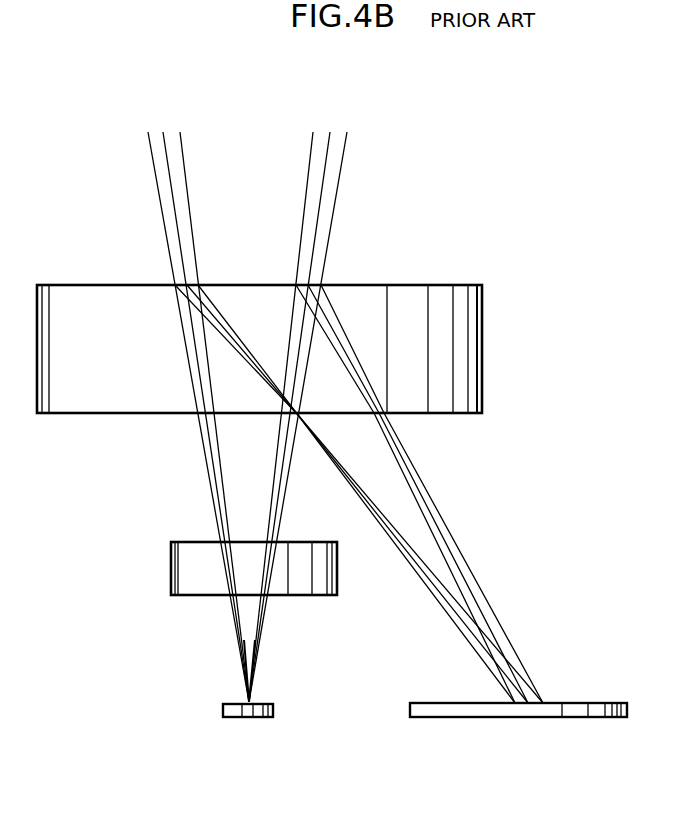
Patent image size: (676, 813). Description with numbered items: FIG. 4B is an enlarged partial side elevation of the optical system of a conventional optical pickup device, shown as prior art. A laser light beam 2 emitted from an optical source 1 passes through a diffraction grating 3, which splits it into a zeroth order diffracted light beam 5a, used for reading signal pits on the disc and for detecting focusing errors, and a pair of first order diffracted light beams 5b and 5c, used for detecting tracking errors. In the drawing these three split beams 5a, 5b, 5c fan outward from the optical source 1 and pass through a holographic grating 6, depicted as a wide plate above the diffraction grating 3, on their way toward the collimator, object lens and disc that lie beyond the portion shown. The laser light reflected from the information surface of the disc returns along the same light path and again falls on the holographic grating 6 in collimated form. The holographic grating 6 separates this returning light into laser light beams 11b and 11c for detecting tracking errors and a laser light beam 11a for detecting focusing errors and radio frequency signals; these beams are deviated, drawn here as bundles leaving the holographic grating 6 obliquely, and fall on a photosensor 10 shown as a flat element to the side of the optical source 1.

The optical source 1 is at (257, 718).
The laser light beam 2 is at (248, 648).
The diffraction grating 3 is at (171, 577).
The zeroth order diffracted light beam 5a is at (164, 133).
The first order diffracted light beam 5b is at (148, 140).
The first order diffracted light beam 5c is at (181, 135).
The holographic grating 6 is at (447, 407).
The photosensor 10 is at (472, 718).
The laser light beam 11a is at (503, 657).
The laser light beam 11b is at (498, 673).
The laser light beam 11c is at (528, 672).